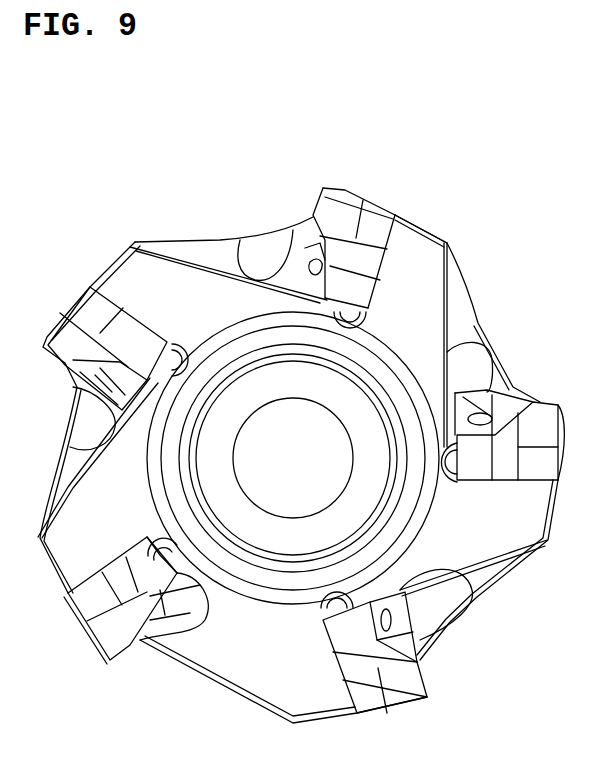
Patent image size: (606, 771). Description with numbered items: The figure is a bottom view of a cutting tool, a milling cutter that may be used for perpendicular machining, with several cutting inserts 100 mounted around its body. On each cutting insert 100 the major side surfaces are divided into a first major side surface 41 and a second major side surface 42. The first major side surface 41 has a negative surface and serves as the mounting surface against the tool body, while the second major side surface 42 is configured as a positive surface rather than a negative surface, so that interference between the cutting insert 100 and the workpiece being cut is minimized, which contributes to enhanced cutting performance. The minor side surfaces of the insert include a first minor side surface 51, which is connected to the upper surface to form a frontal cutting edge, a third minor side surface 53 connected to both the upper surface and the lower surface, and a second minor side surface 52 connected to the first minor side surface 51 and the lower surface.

The cutting insert 100 is at (373, 179).
The first major side surface 41 is at (343, 187).
The second major side surface 42 is at (389, 202).
The first minor side surface 51 is at (327, 212).
The second minor side surface 52 is at (375, 231).
The third minor side surface 53 is at (358, 285).